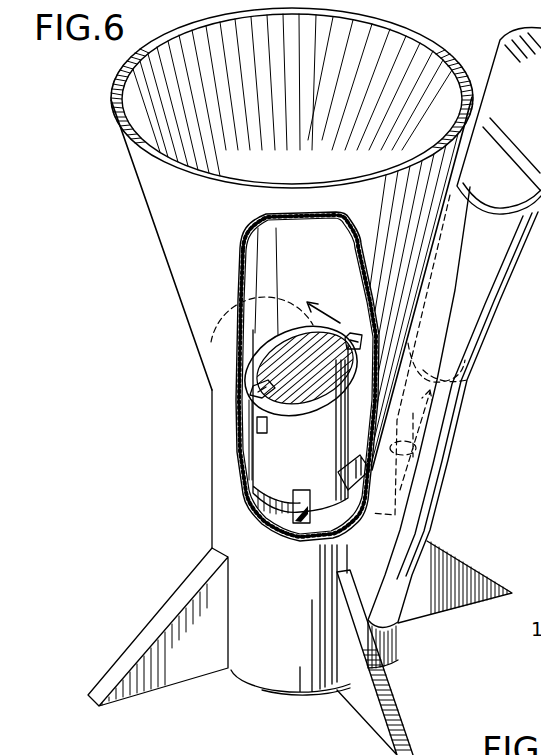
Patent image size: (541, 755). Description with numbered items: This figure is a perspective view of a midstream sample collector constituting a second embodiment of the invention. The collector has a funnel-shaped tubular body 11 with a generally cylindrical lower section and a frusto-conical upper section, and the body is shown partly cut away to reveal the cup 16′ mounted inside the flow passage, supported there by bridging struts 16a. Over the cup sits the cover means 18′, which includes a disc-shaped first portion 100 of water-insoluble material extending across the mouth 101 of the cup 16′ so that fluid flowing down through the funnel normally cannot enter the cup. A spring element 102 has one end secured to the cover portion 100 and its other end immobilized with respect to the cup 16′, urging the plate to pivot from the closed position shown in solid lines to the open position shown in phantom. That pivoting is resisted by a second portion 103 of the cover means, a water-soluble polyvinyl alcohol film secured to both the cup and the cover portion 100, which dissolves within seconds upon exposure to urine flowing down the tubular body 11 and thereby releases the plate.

The tubular body 11 is at (165, 256).
The cup 16′ is at (268, 463).
The cover means 18′ is at (268, 364).
The first portion of cover means 100 is at (258, 387).
The mouth 101 is at (327, 318).
The spring element 102 is at (255, 424).
The second portion of cover means 103 is at (352, 333).
The struts 16a is at (297, 490).